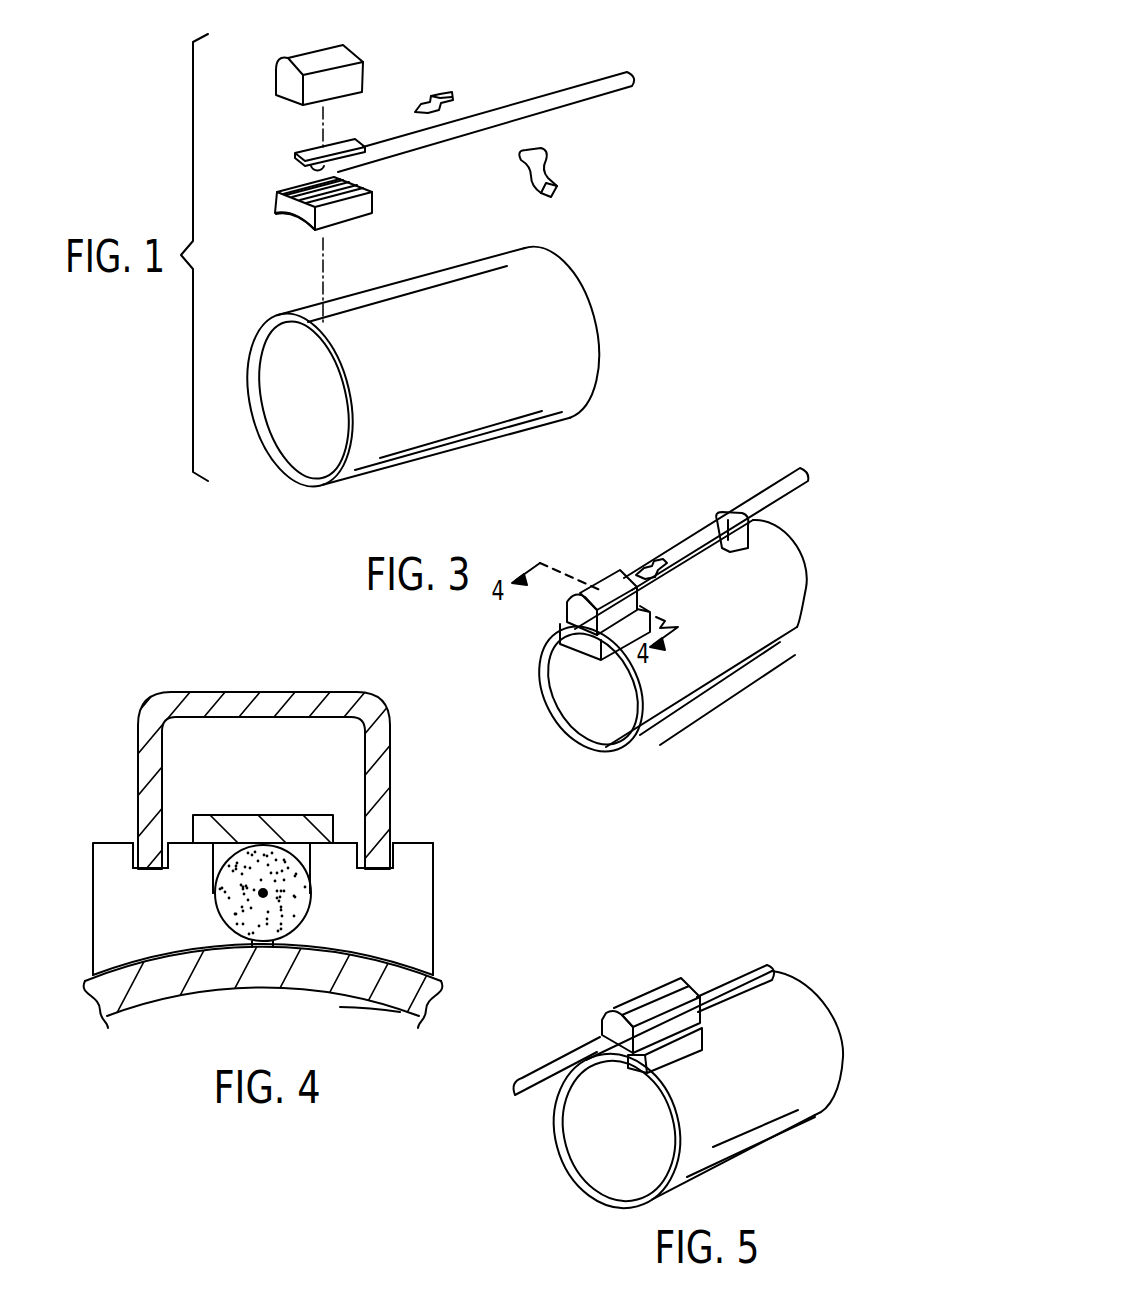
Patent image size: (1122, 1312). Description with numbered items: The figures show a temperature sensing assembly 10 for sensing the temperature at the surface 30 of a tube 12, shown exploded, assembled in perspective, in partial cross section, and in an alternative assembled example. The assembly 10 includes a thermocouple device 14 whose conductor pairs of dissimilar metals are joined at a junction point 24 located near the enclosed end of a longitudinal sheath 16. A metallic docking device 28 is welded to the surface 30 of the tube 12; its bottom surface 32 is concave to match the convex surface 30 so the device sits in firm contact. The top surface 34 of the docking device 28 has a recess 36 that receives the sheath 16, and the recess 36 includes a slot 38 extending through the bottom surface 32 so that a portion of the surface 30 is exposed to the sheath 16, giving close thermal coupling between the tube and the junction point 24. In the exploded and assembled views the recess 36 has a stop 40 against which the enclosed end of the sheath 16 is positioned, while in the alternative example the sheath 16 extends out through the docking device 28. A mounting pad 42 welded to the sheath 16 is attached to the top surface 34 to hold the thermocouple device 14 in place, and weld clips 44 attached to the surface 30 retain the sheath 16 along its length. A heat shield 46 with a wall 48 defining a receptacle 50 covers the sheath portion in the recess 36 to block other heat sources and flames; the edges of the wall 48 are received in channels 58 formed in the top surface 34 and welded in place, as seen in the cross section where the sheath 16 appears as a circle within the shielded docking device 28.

In FIG. 1, the temperature sensing assembly 10 is at (252, 119).
In FIG. 3, the temperature sensing assembly 10 is at (579, 521).
In FIG. 1, the tube 12 is at (400, 284).
In FIG. 3, the tube 12 is at (772, 645).
In FIG. 4, the tube 12 is at (417, 990).
In FIG. 5, the tube 12 is at (767, 1153).
In FIG. 1, the thermocouple device 14 is at (646, 70).
In FIG. 3, the thermocouple device 14 is at (811, 465).
In FIG. 1, the sheath 16 is at (512, 108).
In FIG. 3, the sheath 16 is at (768, 492).
In FIG. 4, the sheath 16 is at (225, 878).
In FIG. 5, the sheath 16 is at (747, 985).
In FIG. 4, the junction point 24 is at (263, 893).
In FIG. 1, the docking device 28 is at (277, 192).
In FIG. 3, the docking device 28 is at (628, 626).
In FIG. 4, the docking device 28 is at (435, 872).
In FIG. 5, the docking device 28 is at (675, 1057).
In FIG. 3, the surface 30 is at (665, 680).
In FIG. 4, the surface 30 is at (390, 968).
In FIG. 1, the bottom surface 32 is at (295, 219).
In FIG. 4, the bottom surface 32 is at (382, 960).
In FIG. 4, the top surface 34 is at (413, 843).
In FIG. 1, the recess 36 is at (340, 181).
In FIG. 4, the recess 36 is at (303, 850).
In FIG. 4, the slot 38 is at (267, 949).
In FIG. 1, the stop 40 is at (290, 186).
In FIG. 1, the mounting pad 42 is at (338, 140).
In FIG. 4, the mounting pad 42 is at (225, 826).
In FIG. 1, the weld clips 44 is at (438, 88).
In FIG. 3, the weld clips 44 is at (655, 562).
In FIG. 1, the heat shield 46 is at (350, 51).
In FIG. 3, the heat shield 46 is at (607, 576).
In FIG. 4, the heat shield 46 is at (114, 697).
In FIG. 5, the heat shield 46 is at (687, 983).
In FIG. 4, the wall 48 is at (136, 800).
In FIG. 4, the receptacle 50 is at (255, 729).
In FIG. 4, the channels 58 is at (136, 843).